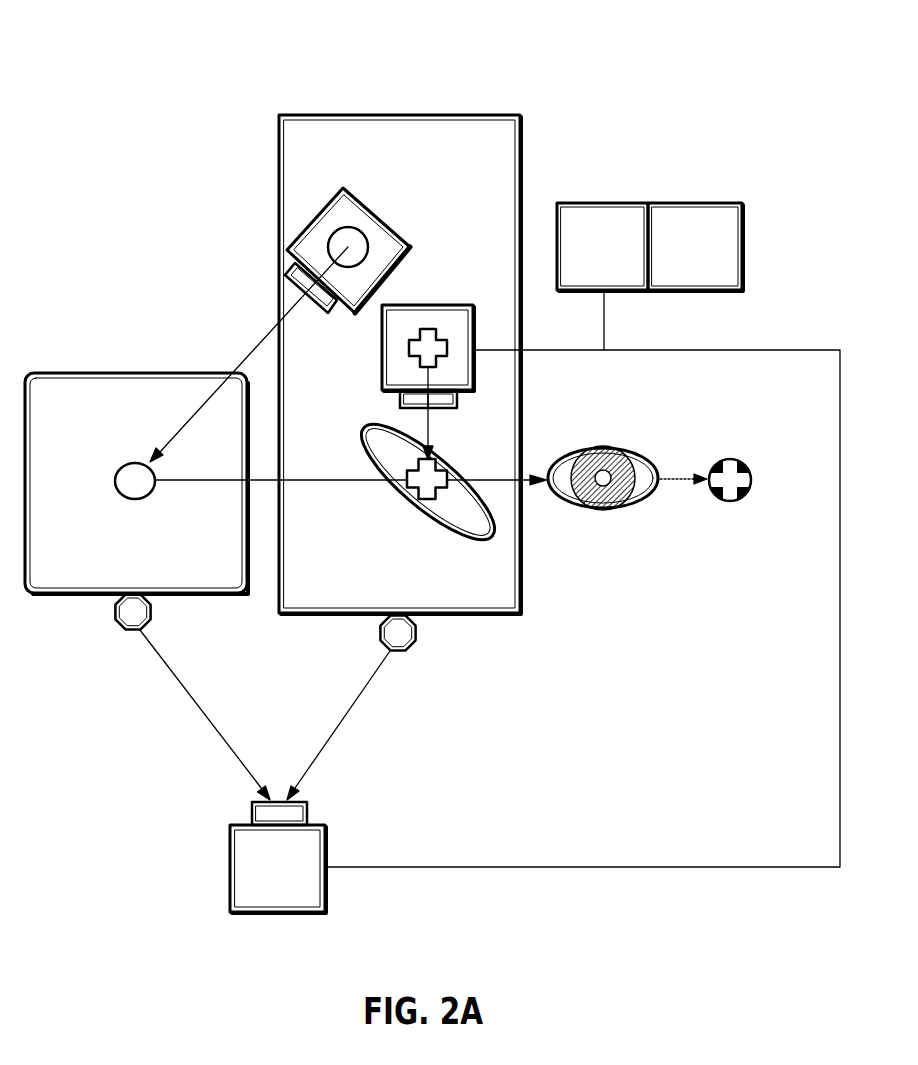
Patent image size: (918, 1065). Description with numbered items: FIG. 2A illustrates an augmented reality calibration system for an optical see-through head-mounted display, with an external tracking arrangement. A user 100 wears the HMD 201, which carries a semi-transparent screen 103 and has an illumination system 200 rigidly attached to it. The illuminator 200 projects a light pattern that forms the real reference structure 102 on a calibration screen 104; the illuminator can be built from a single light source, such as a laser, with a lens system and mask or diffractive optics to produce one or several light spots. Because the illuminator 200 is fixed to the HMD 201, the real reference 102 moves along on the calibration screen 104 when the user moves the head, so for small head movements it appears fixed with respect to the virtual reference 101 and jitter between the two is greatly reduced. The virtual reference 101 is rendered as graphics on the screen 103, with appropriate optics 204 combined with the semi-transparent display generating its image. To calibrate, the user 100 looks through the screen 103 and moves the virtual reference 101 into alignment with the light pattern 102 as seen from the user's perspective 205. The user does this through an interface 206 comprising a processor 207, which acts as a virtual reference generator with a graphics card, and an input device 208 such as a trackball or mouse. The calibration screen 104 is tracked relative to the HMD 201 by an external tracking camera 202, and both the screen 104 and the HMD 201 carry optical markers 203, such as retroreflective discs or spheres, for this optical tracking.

The user 100 is at (628, 449).
The virtual reference 101 is at (412, 495).
The real reference structure 102 is at (122, 462).
The semi-transparent screen 103 is at (455, 524).
The calibration screen 104 is at (175, 373).
The illumination system 200 is at (360, 200).
The HMD 201 is at (463, 115).
The tracking camera 202 is at (230, 880).
The optical markers 203 is at (112, 612).
The optics 204 is at (423, 305).
The user's perspective view 205 is at (738, 462).
The interface 206 is at (655, 206).
The processor 207 is at (602, 203).
The input device 208 is at (696, 225).